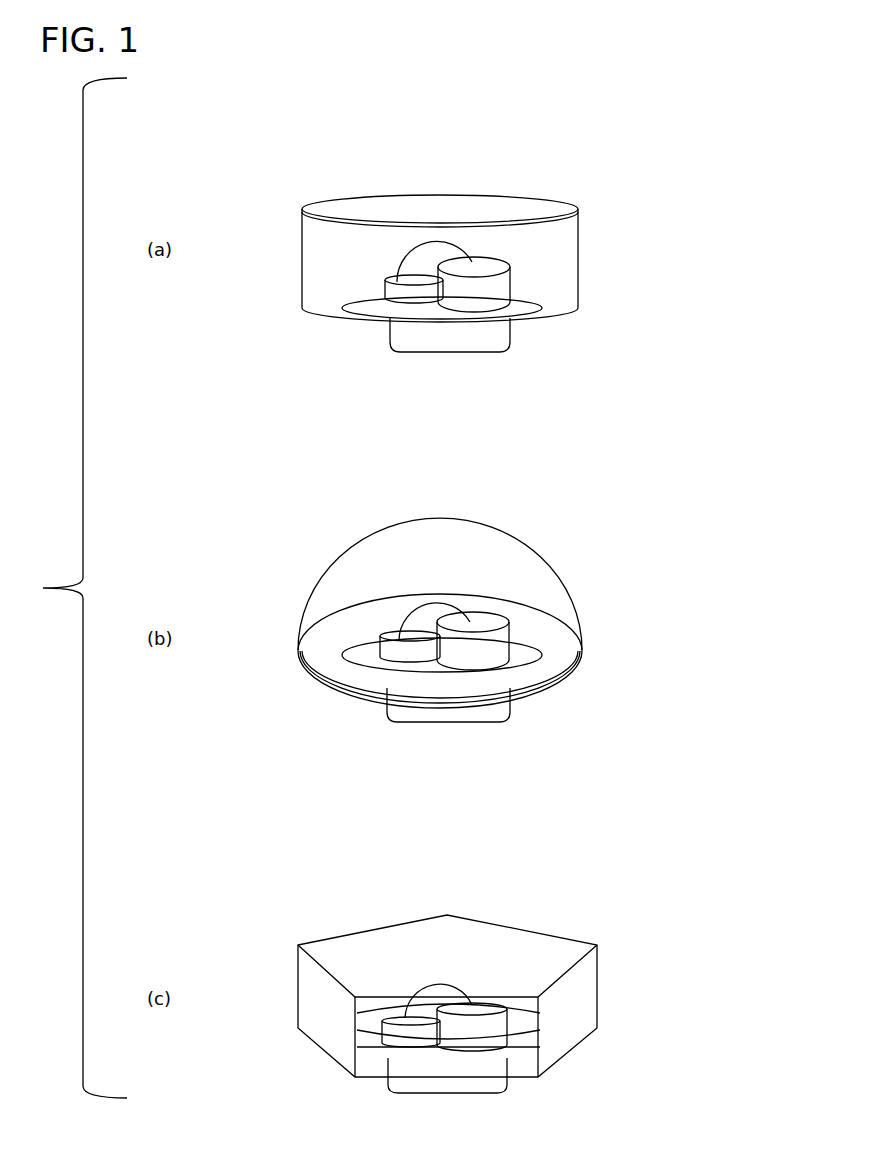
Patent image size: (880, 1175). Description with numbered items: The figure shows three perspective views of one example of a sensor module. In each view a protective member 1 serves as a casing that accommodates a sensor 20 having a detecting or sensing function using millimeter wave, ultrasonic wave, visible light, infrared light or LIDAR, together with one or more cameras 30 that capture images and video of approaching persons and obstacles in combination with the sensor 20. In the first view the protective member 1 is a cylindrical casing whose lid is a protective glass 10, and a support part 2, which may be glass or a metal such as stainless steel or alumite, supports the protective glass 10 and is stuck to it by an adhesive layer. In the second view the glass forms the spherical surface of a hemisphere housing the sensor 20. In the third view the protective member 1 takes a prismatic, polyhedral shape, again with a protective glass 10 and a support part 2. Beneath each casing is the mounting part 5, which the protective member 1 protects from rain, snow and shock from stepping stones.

The protective member 1 is at (668, 88).
The support part 2 is at (580, 235).
The mounting part 5 is at (448, 725).
The protective glass 10 is at (550, 195).
The sensor 20 is at (500, 310).
The camera 30 is at (417, 250).